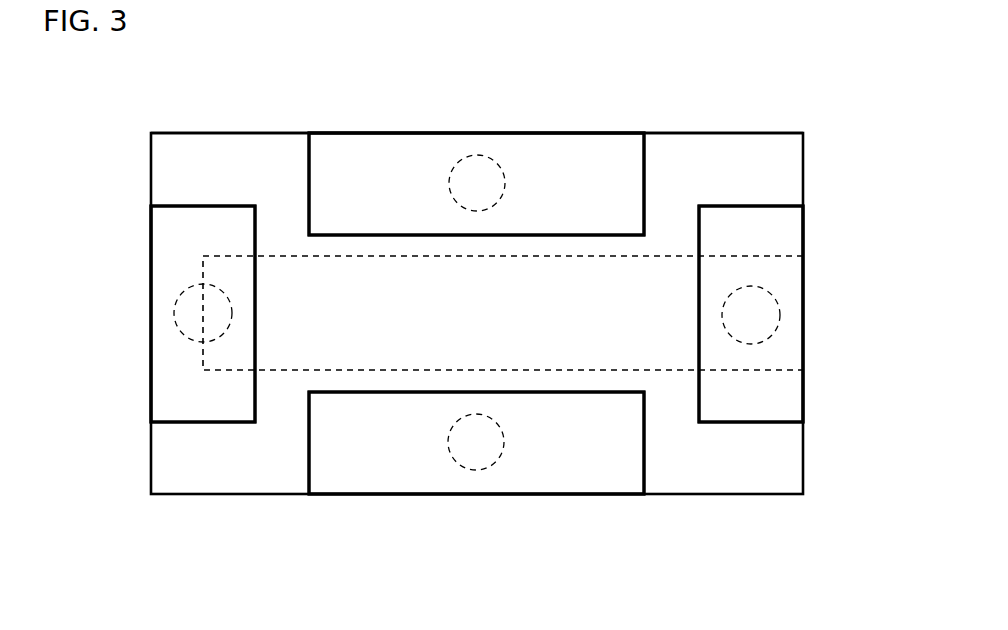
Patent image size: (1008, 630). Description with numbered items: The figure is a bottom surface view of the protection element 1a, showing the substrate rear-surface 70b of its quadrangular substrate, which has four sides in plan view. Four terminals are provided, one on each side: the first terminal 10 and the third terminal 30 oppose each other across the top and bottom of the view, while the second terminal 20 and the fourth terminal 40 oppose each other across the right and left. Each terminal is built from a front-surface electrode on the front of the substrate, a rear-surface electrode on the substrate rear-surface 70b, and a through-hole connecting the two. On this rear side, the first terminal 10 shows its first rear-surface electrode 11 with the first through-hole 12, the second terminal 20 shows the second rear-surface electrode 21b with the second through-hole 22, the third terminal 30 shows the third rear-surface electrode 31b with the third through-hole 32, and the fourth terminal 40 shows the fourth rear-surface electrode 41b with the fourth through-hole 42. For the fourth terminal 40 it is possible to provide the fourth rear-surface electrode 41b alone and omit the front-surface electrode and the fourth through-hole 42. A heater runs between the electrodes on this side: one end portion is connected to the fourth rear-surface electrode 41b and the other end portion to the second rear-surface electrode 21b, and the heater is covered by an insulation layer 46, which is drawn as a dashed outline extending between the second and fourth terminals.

The protection element 1a is at (777, 95).
The first terminal 10 is at (569, 133).
The first rear-surface electrode 11 is at (381, 158).
The first through-hole 12 is at (461, 158).
The second terminal 20 is at (803, 240).
The second rear-surface electrode 21b is at (788, 397).
The second through-hole 22 is at (779, 318).
The third terminal 30 is at (428, 494).
The third rear-surface electrode 31b is at (607, 480).
The third through-hole 32 is at (495, 467).
The fourth terminal 40 is at (150, 388).
The fourth rear-surface electrode 41b is at (165, 238).
The fourth through-hole 42 is at (175, 313).
The insulation layer 46 is at (675, 372).
The substrate rear-surface 70b is at (792, 162).